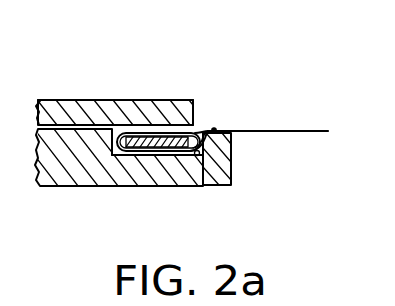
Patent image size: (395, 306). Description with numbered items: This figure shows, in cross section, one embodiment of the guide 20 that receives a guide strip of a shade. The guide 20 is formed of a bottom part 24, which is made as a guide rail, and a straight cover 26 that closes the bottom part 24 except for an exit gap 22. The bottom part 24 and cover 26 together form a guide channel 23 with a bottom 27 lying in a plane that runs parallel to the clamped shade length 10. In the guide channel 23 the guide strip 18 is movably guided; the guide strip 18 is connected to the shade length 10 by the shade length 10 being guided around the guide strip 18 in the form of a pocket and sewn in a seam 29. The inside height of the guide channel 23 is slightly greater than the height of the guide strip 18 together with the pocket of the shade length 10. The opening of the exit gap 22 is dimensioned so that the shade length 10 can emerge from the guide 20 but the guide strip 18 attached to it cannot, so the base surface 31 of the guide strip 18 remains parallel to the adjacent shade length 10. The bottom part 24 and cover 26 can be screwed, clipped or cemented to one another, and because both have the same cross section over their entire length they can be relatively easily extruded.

The shade length 10 is at (278, 131).
The guide strip 18 is at (150, 148).
The guide 20 is at (67, 93).
The exit gap 22 is at (207, 130).
The guide channel 23 is at (112, 157).
The bottom part 24 is at (68, 167).
The cover 26 is at (118, 117).
The bottom 27 is at (200, 158).
The seam 29 is at (215, 130).
The base surface 31 is at (163, 150).